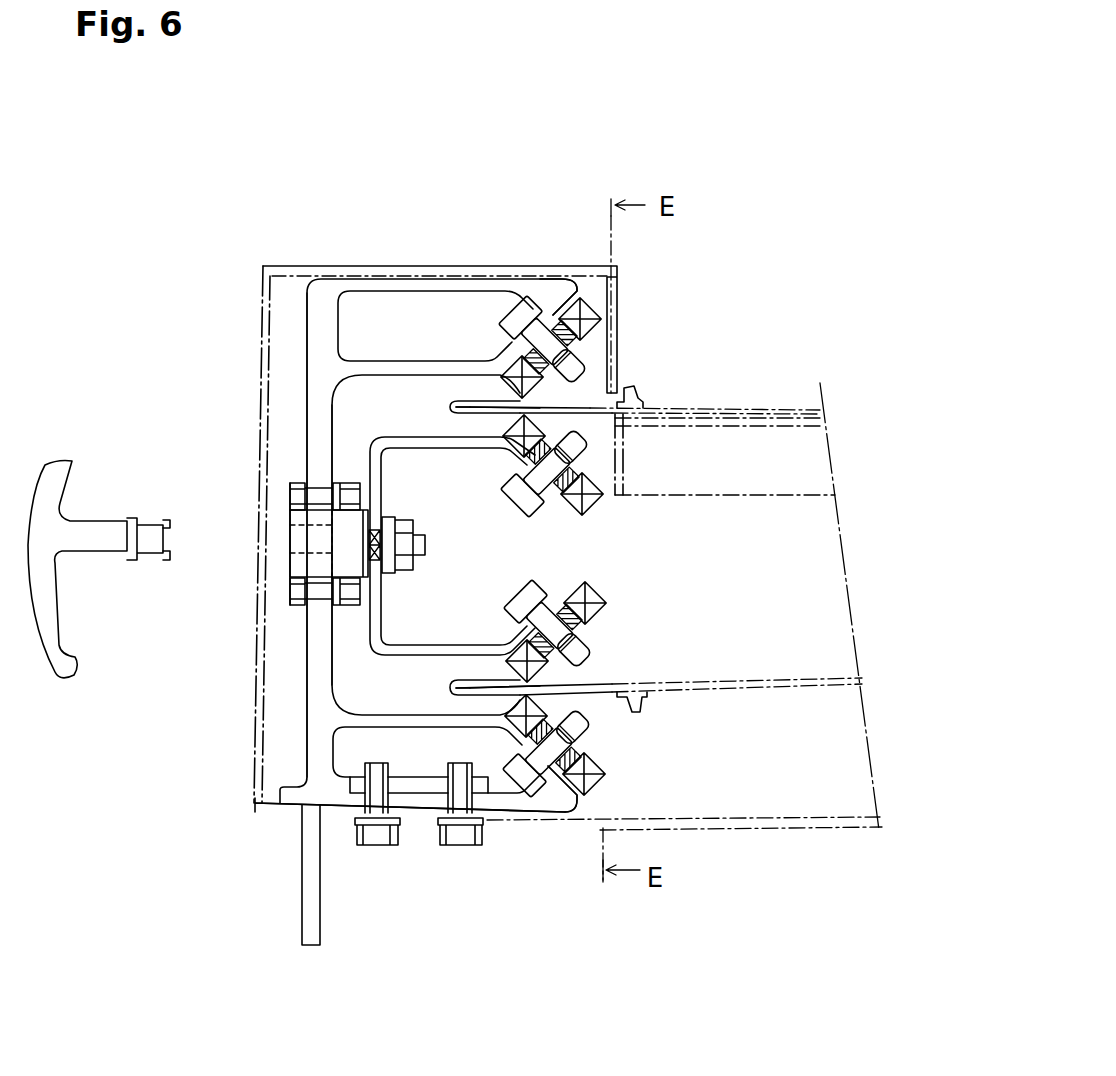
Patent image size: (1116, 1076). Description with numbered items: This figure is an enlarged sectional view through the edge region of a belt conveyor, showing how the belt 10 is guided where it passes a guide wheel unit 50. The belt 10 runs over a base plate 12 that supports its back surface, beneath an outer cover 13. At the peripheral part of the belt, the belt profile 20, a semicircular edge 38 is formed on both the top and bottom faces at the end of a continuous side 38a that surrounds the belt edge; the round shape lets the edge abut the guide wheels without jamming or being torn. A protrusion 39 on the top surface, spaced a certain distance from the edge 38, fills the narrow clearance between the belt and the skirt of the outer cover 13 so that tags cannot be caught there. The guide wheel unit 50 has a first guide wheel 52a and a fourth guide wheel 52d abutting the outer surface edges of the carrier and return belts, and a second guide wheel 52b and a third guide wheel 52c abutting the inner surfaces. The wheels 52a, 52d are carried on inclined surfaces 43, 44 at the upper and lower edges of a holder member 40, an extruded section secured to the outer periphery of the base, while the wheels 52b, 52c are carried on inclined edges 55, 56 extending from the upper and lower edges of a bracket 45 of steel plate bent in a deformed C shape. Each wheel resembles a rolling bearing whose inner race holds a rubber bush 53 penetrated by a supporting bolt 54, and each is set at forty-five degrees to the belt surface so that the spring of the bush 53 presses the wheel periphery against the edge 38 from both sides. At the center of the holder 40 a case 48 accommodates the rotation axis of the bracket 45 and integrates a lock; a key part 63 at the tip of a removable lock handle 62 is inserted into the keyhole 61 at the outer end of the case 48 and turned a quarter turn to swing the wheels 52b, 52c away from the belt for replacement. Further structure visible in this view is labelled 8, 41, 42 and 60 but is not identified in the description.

The frame 8 is at (258, 305).
The belt 10 is at (748, 407).
The base plate 12 is at (740, 490).
The outer cover 13 is at (300, 266).
The belt profile 20 is at (481, 430).
The semicircular edge 38 is at (468, 398).
The continuous side 38a is at (452, 412).
The protrusion 39 is at (634, 390).
The holder member 40 is at (296, 404).
The bracket 41 is at (413, 285).
The bottom plate 42 is at (503, 812).
The inclined surface 43 is at (560, 300).
The inclined surface 44 is at (568, 805).
The bracket 45 is at (378, 445).
The case 48 is at (322, 523).
The guide wheel unit 50 is at (524, 260).
The first guide wheel 52a is at (598, 322).
The second guide wheel 52b is at (598, 514).
The third guide wheel 52c is at (600, 602).
The fourth guide wheel 52d is at (602, 774).
The rubber bush 53 is at (600, 352).
The supporting bolt 54 is at (512, 497).
The inclined edge 55 is at (545, 508).
The inclined edge 56 is at (548, 592).
The lever bracket 60 is at (288, 576).
The keyhole 61 is at (320, 540).
The removable lock handle 62 is at (58, 468).
The key part 63 is at (167, 560).